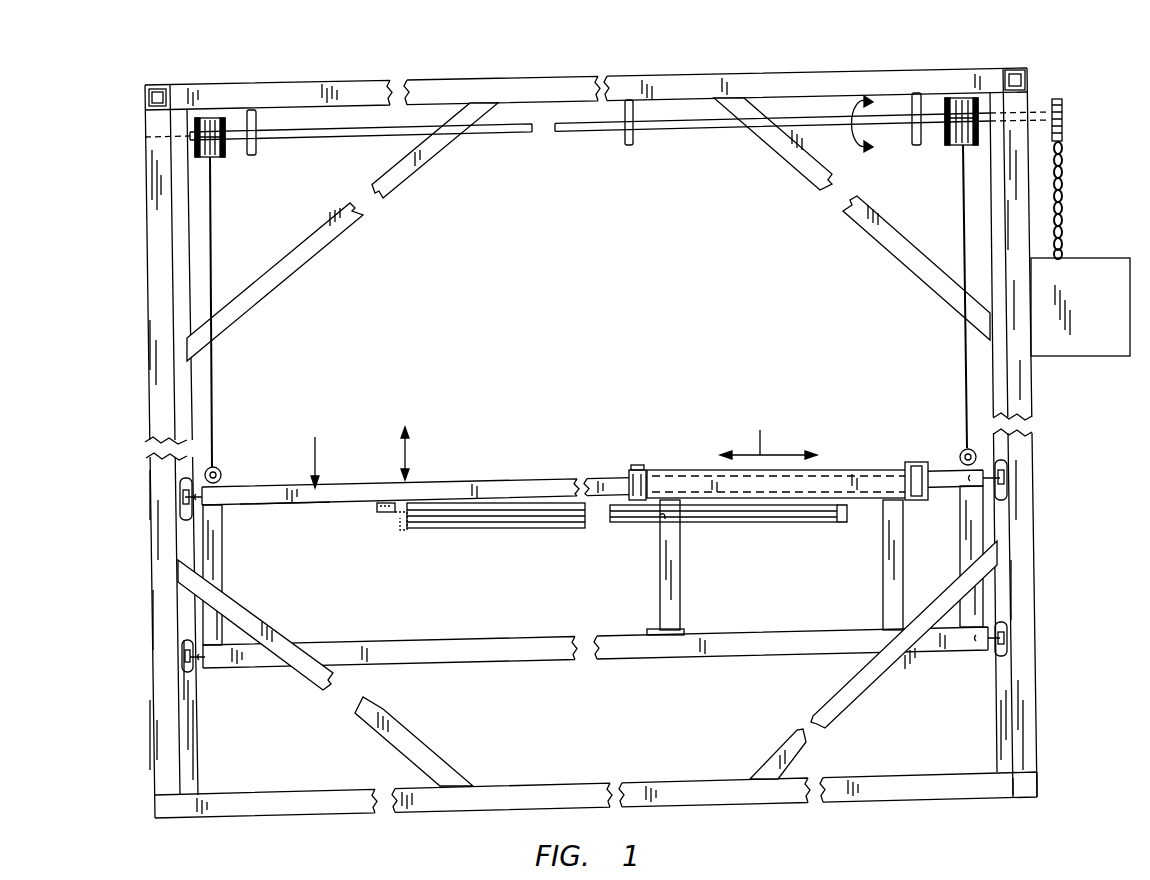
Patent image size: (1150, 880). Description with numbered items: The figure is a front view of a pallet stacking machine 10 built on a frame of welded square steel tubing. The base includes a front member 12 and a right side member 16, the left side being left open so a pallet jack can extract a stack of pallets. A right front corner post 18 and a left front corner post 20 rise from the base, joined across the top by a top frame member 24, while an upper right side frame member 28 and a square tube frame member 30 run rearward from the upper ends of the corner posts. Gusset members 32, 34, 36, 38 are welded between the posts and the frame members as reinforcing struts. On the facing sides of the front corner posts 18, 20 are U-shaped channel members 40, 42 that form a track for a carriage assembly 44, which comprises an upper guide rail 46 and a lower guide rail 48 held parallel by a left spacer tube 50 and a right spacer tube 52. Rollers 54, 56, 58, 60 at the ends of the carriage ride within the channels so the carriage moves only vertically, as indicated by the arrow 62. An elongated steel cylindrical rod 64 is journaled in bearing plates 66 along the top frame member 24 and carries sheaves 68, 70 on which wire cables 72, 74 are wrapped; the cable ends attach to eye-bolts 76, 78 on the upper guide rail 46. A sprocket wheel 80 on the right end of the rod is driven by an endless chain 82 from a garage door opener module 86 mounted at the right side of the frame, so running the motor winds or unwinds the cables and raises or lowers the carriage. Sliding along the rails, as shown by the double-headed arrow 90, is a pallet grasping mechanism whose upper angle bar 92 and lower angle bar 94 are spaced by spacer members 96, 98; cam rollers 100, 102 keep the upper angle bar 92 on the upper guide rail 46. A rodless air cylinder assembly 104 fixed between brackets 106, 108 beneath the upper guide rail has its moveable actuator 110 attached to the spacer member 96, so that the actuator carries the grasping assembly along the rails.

The pallet stacking machine 10 is at (1070, 727).
The front member 12 is at (500, 788).
The right side member 16 is at (1038, 790).
The right front corner post 18 is at (1036, 688).
The left front corner post 20 is at (152, 576).
The top frame member 24 is at (687, 76).
The upper right side frame member 28 is at (1018, 71).
The square tube frame member 30 is at (160, 86).
The gusset member 32 is at (306, 241).
The gusset member 34 is at (882, 243).
The gusset member 36 is at (222, 590).
The gusset member 38 is at (835, 693).
The U-shaped channel member 40 is at (996, 728).
The U-shaped channel member 42 is at (199, 733).
The carriage assembly 44 is at (592, 460).
The upper guide rail 46 is at (282, 504).
The lower guide rail 48 is at (403, 638).
The left spacer tube 50 is at (223, 556).
The right spacer tube 52 is at (960, 541).
The roller 54 is at (194, 478).
The roller 56 is at (195, 673).
The roller 58 is at (994, 654).
The roller 60 is at (1006, 476).
The arrow 62 is at (408, 455).
The elongated steel cylindrical rod 64 is at (503, 136).
The bearing plates 66 is at (252, 152).
The sheave 68 is at (203, 118).
The sheave 70 is at (958, 98).
The wire cable 72 is at (213, 216).
The wire cable 74 is at (964, 210).
The eye-bolt 76 is at (222, 472).
The eye-bolt 78 is at (961, 452).
The sprocket wheel 80 is at (1063, 113).
The endless chain 82 is at (1063, 165).
The garage door opener module 86 is at (1077, 257).
The double-headed arrow 90 is at (768, 434).
The upper angle bar 92 is at (831, 468).
The lower angle bar 94 is at (805, 630).
The spacer member 96 is at (682, 569).
The spacer member 98 is at (882, 565).
The cam roller 100 is at (636, 468).
The cam roller 102 is at (912, 462).
The rodless air cylinder assembly 104 is at (455, 529).
The bracket 106 is at (398, 517).
The bracket 108 is at (843, 508).
The moveable actuator 110 is at (660, 520).